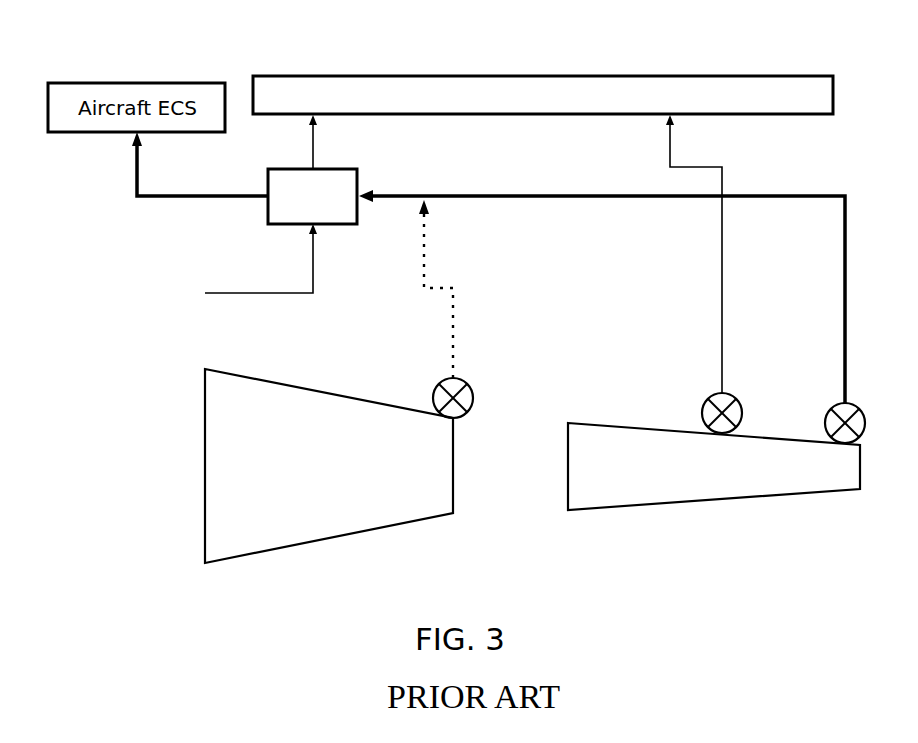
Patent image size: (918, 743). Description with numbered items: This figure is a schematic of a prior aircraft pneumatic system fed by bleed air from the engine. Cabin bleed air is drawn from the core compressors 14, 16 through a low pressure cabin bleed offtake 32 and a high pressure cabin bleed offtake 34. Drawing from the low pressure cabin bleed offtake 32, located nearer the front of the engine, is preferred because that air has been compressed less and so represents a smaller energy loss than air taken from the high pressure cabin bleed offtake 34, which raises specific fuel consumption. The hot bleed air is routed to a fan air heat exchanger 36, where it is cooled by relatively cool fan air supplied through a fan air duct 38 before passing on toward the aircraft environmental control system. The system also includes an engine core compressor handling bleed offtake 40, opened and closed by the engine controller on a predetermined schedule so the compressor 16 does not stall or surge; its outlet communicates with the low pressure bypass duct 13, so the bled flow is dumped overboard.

The bypass duct 13 is at (706, 108).
The compressor 14 is at (320, 540).
The compressor 16 is at (720, 500).
The low pressure cabin bleed offtake 32 is at (468, 385).
The high pressure cabin bleed offtake 34 is at (830, 409).
The fan air heat exchanger 36 is at (337, 225).
The fan air duct 38 is at (243, 294).
The engine core compressor handling bleed offtake 40 is at (708, 396).